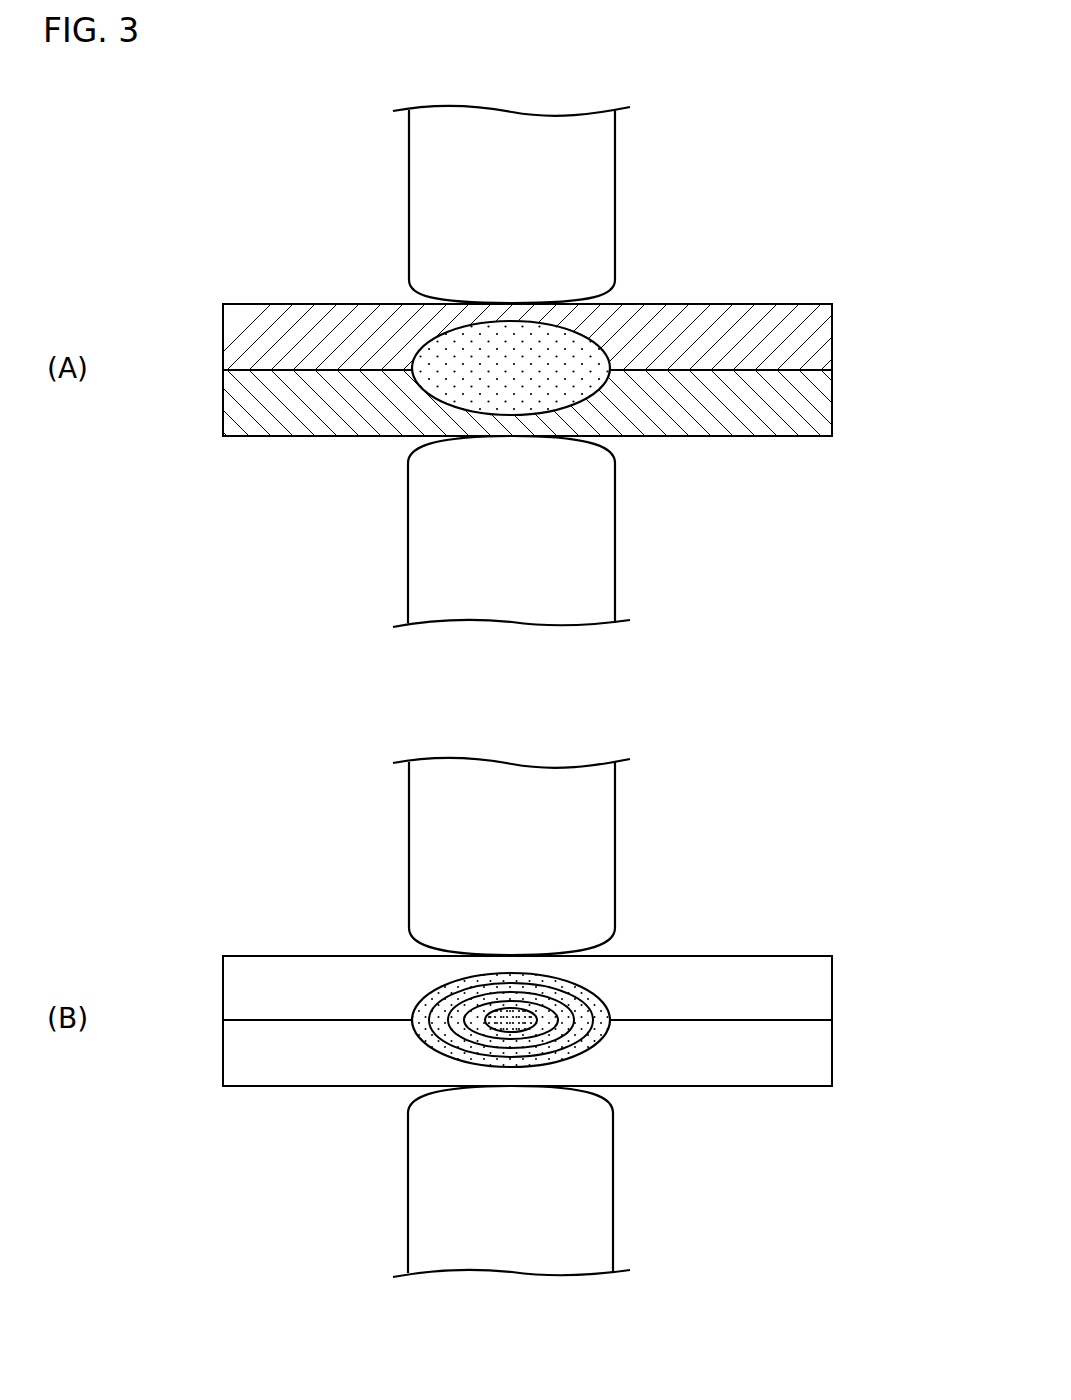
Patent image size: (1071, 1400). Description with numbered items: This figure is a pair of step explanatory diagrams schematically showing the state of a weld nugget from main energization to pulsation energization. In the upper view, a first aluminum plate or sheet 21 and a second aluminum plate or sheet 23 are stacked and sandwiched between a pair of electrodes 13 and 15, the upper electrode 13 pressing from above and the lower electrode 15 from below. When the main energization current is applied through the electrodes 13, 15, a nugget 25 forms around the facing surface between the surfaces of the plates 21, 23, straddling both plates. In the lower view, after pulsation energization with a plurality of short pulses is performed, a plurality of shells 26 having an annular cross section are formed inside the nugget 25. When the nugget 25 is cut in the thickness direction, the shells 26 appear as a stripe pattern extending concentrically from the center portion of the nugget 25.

The electrode 13 is at (407, 150).
The electrode 15 is at (407, 525).
The first aluminum plate or sheet 21 is at (832, 330).
The second aluminum plate or sheet 23 is at (832, 397).
The nugget 25 is at (588, 320).
The shell 26 is at (448, 1012).